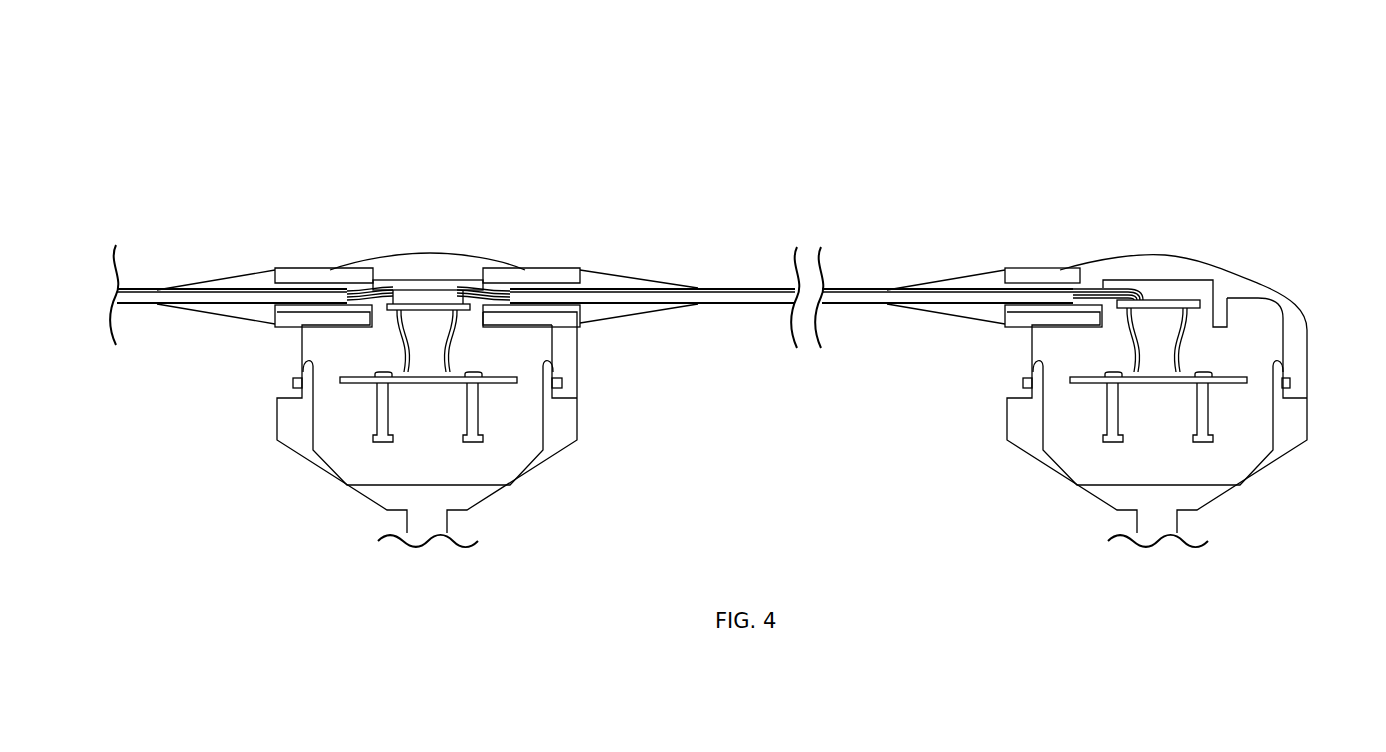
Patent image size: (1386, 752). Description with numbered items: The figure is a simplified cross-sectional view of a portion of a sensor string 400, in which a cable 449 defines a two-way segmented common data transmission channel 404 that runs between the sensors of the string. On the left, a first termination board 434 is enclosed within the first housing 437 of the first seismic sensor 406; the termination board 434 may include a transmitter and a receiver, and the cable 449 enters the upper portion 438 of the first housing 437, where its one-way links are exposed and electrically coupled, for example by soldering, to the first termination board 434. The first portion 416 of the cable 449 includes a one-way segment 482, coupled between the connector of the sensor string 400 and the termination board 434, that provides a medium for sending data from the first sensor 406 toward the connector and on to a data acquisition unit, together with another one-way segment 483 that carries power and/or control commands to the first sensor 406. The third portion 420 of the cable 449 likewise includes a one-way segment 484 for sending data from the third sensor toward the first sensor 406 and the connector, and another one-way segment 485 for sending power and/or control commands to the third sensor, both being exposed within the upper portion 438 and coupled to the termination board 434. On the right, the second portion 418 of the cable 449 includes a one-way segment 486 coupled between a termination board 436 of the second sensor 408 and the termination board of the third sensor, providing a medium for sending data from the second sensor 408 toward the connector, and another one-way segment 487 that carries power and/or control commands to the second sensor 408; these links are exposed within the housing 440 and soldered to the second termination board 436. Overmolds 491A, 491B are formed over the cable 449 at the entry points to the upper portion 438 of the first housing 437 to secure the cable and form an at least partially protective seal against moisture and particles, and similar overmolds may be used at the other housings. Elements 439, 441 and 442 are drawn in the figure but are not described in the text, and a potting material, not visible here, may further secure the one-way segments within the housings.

The sensor string 400 is at (1062, 88).
The common data transmission channel 404 is at (770, 245).
The first seismic sensor 406 is at (592, 250).
The second sensor 408 is at (1310, 270).
The first portion of the cable 416 is at (142, 289).
The second portion of the cable 418 is at (862, 288).
The third portion of the cable 420 is at (722, 288).
The first termination board 434 is at (432, 288).
The second termination board 436 is at (1178, 292).
The first housing 437 is at (297, 240).
The upper portion of the first housing 438 is at (398, 262).
The first housing 439 is at (540, 467).
The housing of the second sensor 440 is at (1032, 242).
The second overmold 441 is at (1142, 283).
The second housing 442 is at (1272, 468).
The cable 449 is at (142, 305).
The one-way segment 482 is at (355, 302).
The one-way segment 483 is at (367, 291).
The one-way segment 484 is at (492, 302).
The one-way segment 485 is at (494, 291).
The one-way segment 486 is at (1098, 304).
The one-way segment 487 is at (1140, 284).
The overmold 491A is at (210, 289).
The overmold 491B is at (640, 314).